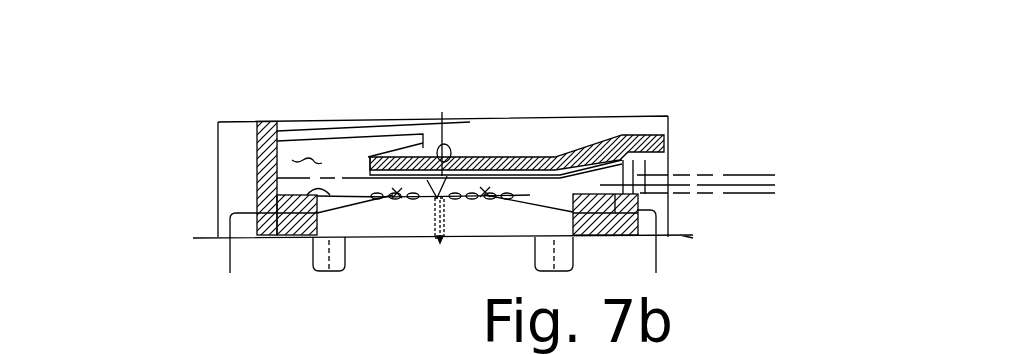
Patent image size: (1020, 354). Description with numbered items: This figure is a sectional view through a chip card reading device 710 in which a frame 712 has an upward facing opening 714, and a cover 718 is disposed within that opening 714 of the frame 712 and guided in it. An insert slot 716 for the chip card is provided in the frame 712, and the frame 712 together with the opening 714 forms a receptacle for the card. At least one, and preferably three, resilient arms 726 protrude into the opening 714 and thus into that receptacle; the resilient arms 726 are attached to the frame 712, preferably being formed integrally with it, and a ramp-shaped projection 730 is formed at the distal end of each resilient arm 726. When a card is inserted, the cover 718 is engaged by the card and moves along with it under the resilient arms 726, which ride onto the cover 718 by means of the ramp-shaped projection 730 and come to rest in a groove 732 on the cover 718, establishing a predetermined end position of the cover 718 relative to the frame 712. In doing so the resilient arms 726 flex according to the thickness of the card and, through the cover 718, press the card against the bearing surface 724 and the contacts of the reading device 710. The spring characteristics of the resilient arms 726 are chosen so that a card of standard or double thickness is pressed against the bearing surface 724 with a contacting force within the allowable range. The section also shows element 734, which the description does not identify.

The chip card reading device 710 is at (198, 113).
The frame 712 is at (258, 183).
The upward facing opening 714 is at (307, 160).
The insert slot 716 is at (676, 199).
The cover 718 is at (545, 157).
The bearing surface 724 is at (316, 200).
The resilient arms 726 is at (386, 131).
The ramp-shaped projection 730 is at (448, 146).
The groove 732 is at (432, 199).
The rollers 734 is at (407, 198).